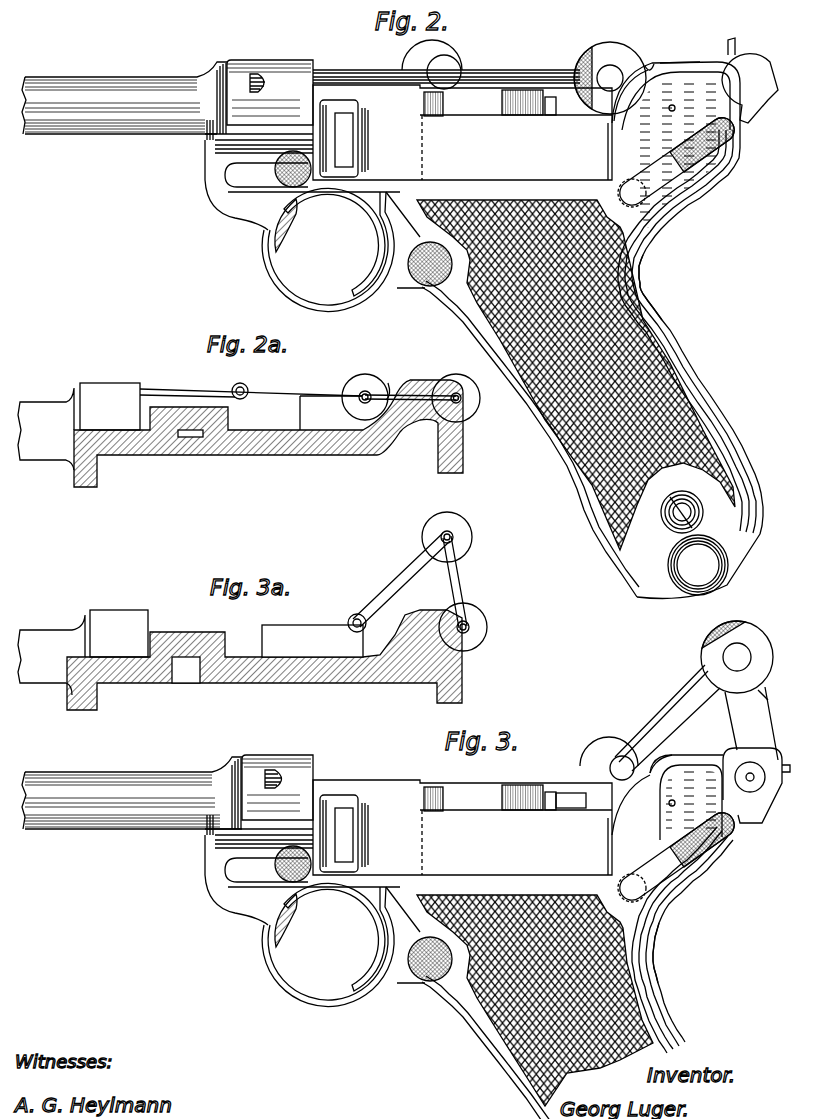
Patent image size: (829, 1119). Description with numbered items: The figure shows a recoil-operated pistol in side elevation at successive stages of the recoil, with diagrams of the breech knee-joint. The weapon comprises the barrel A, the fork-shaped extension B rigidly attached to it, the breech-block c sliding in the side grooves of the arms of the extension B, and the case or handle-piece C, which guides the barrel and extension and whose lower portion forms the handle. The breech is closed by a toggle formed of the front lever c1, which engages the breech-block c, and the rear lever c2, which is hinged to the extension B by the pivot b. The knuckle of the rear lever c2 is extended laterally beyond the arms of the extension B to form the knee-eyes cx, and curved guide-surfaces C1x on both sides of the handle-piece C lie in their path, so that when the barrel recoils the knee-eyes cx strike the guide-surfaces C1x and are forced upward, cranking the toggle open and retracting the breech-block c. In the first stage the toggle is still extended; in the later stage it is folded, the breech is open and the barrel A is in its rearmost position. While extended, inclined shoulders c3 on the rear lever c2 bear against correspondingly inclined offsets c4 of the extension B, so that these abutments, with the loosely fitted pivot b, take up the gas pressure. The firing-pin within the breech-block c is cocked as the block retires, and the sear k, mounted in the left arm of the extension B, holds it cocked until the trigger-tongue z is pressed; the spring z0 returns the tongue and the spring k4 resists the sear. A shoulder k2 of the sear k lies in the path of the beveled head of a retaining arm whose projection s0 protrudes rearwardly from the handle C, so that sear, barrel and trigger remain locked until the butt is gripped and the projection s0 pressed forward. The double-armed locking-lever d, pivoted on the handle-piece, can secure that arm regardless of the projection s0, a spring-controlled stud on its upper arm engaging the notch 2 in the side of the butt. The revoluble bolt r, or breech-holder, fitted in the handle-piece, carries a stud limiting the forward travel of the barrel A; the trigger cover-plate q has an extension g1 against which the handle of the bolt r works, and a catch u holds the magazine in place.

In FIG. 2, the barrel A is at (172, 87).
In FIG. 2A, the barrel A is at (46, 429).
In FIG. 3A, the barrel A is at (51, 655).
In FIG. 3, the barrel A is at (172, 782).
In FIG. 2, the fork-shaped barrel extension B is at (317, 80).
In FIG. 2A, the fork-shaped barrel extension B is at (110, 406).
In FIG. 3A, the fork-shaped barrel extension B is at (119, 633).
In FIG. 3, the fork-shaped barrel extension B is at (305, 783).
In FIG. 2, the case or handle-piece C is at (455, 343).
In FIG. 2A, the case or handle-piece C is at (268, 433).
In FIG. 3A, the case or handle-piece C is at (264, 660).
In FIG. 3, the case or handle-piece C is at (469, 937).
In FIG. 2, the trigger cover-plate q is at (357, 138).
In FIG. 3, the trigger cover-plate q is at (357, 833).
In FIG. 2, the sear k is at (453, 110).
In FIG. 3, the sear k is at (441, 816).
In FIG. 2, the shoulder of the sear k2 is at (528, 102).
In FIG. 3, the shoulder of the sear k2 is at (529, 813).
In FIG. 3, the sear spring k4 is at (574, 819).
In FIG. 2, the breech-block c is at (446, 64).
In FIG. 2A, the breech-block c is at (251, 406).
In FIG. 3A, the breech-block c is at (312, 641).
In FIG. 2A, the front lever of the toggle c1 is at (312, 400).
In FIG. 3A, the front lever of the toggle c1 is at (413, 570).
In FIG. 3, the front lever of the toggle c1 is at (675, 705).
In FIG. 2A, the rear lever of the toggle c2 is at (405, 392).
In FIG. 3A, the rear lever of the toggle c2 is at (458, 583).
In FIG. 3, the rear lever of the toggle c2 is at (751, 723).
In FIG. 2, the inclined shoulders c3 is at (644, 66).
In FIG. 3, the inclined shoulders c3 is at (765, 700).
In FIG. 2, the inclined offsets or abutments c4 is at (663, 62).
In FIG. 3, the inclined offsets or abutments c4 is at (663, 765).
In FIG. 2, the knee-eyes (studs or projections) cx is at (610, 78).
In FIG. 2A, the knee-eyes (studs or projections) cx is at (365, 397).
In FIG. 3A, the knee-eyes (studs or projections) cx is at (447, 537).
In FIG. 3, the knee-eyes (studs or projections) cx is at (737, 657).
In FIG. 2, the curved guide-surfaces C1x is at (618, 128).
In FIG. 2A, the curved guide-surfaces C1x is at (387, 385).
In FIG. 3A, the curved guide-surfaces C1x is at (383, 632).
In FIG. 3, the curved guide-surfaces C1x is at (643, 787).
In FIG. 2, the pivot b is at (747, 70).
In FIG. 2A, the pivot b is at (465, 412).
In FIG. 3A, the pivot b is at (483, 625).
In FIG. 3, the pivot b is at (756, 785).
In FIG. 2, the double-armed locking-lever d is at (676, 162).
In FIG. 3, the double-armed locking-lever d is at (676, 857).
In FIG. 2, the notch 2 is at (676, 110).
In FIG. 3, the notch 2 is at (676, 805).
In FIG. 2, the extension of the trigger cover-plate g1 is at (257, 158).
In FIG. 3, the extension of the trigger cover-plate g1 is at (280, 864).
In FIG. 2, the revoluble bolt or breech-holder r is at (235, 183).
In FIG. 3, the revoluble bolt or breech-holder r is at (257, 894).
In FIG. 2, the trigger-tongue z is at (295, 222).
In FIG. 3, the trigger-tongue z is at (292, 920).
In FIG. 2, the trigger spring z0 is at (372, 197).
In FIG. 3, the trigger spring z0 is at (334, 937).
In FIG. 2, the magazine catch u is at (420, 290).
In FIG. 3, the magazine catch u is at (430, 974).
In FIG. 2, the projection of the retaining arm s0 is at (670, 307).
In FIG. 3, the projection of the retaining arm s0 is at (667, 955).